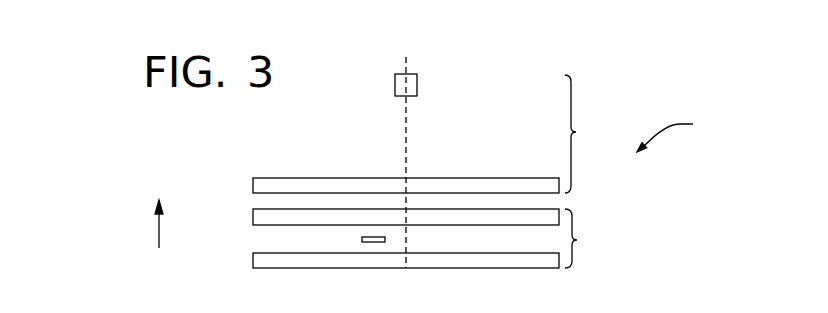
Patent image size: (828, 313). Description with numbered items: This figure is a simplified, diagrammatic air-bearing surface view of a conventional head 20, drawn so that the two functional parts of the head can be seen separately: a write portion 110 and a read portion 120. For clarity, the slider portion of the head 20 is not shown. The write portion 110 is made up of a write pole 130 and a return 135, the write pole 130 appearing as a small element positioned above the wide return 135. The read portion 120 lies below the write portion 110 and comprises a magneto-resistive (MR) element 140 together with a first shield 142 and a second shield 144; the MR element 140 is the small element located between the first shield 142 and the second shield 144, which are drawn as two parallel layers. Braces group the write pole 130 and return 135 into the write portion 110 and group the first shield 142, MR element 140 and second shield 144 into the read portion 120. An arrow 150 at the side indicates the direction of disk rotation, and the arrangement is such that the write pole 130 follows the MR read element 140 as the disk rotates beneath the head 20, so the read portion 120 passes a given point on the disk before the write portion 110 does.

The head 20 is at (680, 132).
The write portion 110 is at (593, 134).
The read portion 120 is at (593, 238).
The write pole 130 is at (417, 86).
The return 135 is at (441, 178).
The magneto-resistive (MR) element 140 is at (362, 240).
The first shield 142 is at (253, 216).
The second shield 144 is at (253, 260).
The arrow 150 is at (157, 235).